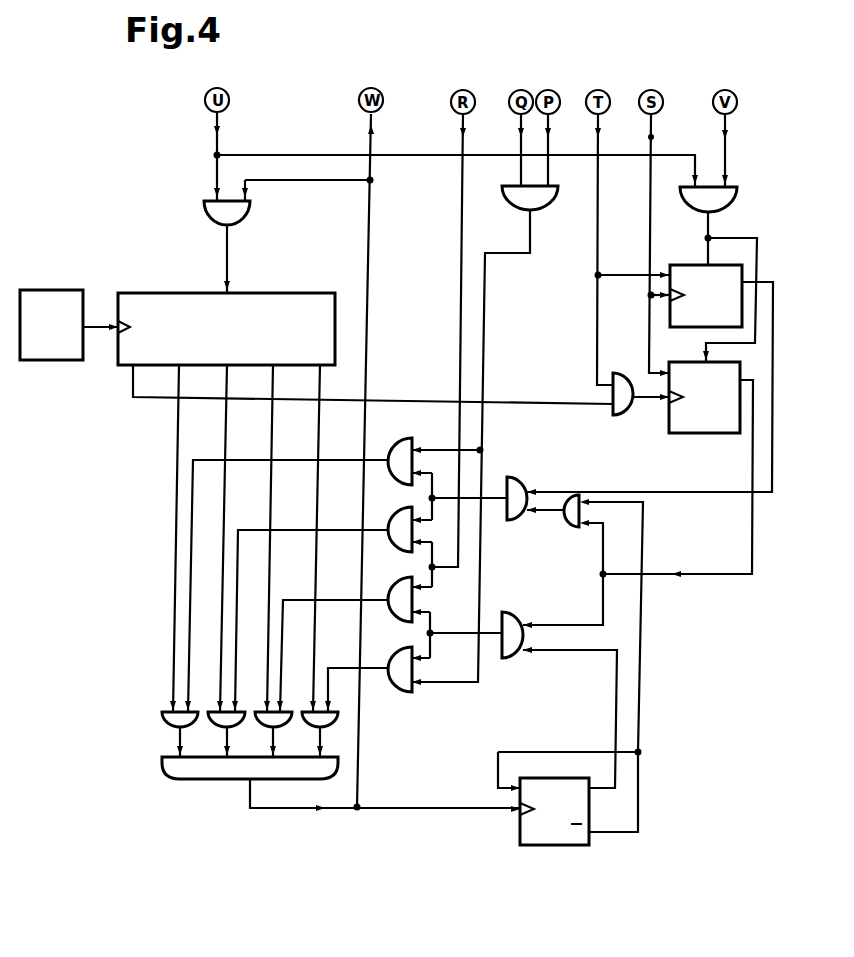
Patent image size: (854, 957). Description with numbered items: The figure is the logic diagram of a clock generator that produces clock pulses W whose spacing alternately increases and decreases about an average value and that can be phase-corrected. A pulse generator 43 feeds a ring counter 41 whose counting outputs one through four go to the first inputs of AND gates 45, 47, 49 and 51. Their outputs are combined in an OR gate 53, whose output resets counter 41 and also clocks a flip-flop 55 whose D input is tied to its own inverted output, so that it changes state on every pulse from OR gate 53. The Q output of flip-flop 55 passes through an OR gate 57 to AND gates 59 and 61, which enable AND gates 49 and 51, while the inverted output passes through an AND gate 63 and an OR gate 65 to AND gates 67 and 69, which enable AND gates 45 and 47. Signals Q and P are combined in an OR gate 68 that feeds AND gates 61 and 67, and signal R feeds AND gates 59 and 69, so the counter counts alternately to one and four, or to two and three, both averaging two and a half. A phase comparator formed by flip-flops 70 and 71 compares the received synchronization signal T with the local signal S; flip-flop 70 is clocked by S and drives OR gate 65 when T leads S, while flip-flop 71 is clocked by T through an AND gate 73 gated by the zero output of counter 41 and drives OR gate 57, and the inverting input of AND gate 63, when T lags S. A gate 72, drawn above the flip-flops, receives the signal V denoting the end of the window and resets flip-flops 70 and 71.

The counter 41 is at (276, 296).
The pulse generator 43 is at (67, 290).
The AND gate 45 is at (160, 728).
The AND gate 47 is at (218, 730).
The AND gate 49 is at (265, 730).
The AND gate 51 is at (313, 730).
The OR gate 53 is at (220, 780).
The flip-flop 55 is at (248, 218).
The OR gate 57 is at (510, 612).
The AND gate 59 is at (400, 572).
The AND gate 61 is at (400, 642).
The AND gate 63 is at (574, 528).
The OR gate 65 is at (514, 476).
The AND gate 67 is at (404, 438).
The OR gate 68 is at (540, 210).
The AND gate 69 is at (400, 504).
The flip-flop 70 is at (684, 265).
The flip-flop 71 is at (714, 434).
The AND gate 72 is at (732, 200).
The AND gate 73 is at (620, 418).